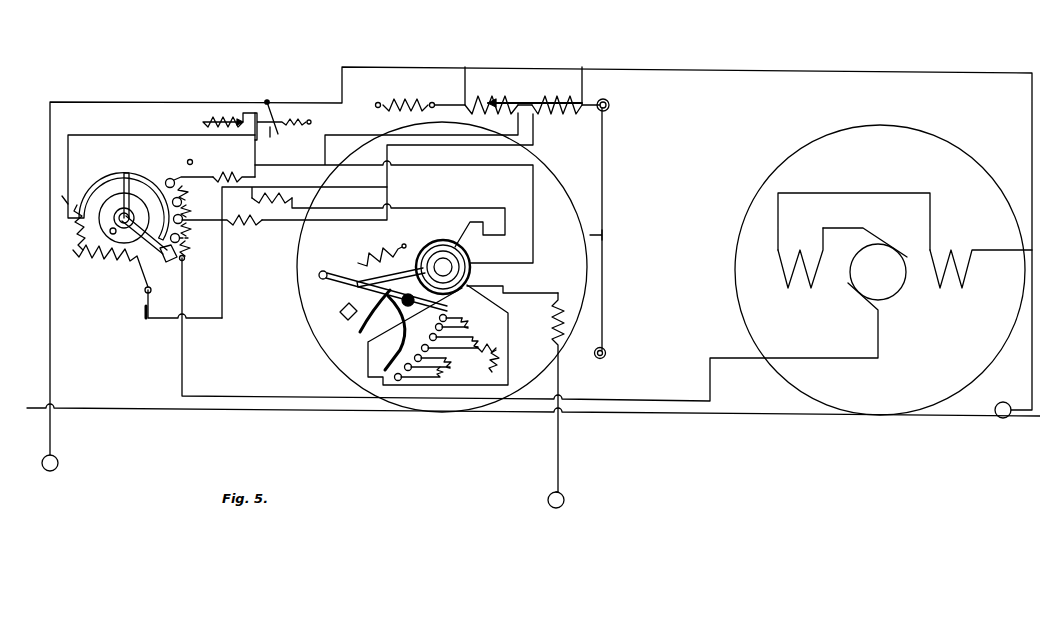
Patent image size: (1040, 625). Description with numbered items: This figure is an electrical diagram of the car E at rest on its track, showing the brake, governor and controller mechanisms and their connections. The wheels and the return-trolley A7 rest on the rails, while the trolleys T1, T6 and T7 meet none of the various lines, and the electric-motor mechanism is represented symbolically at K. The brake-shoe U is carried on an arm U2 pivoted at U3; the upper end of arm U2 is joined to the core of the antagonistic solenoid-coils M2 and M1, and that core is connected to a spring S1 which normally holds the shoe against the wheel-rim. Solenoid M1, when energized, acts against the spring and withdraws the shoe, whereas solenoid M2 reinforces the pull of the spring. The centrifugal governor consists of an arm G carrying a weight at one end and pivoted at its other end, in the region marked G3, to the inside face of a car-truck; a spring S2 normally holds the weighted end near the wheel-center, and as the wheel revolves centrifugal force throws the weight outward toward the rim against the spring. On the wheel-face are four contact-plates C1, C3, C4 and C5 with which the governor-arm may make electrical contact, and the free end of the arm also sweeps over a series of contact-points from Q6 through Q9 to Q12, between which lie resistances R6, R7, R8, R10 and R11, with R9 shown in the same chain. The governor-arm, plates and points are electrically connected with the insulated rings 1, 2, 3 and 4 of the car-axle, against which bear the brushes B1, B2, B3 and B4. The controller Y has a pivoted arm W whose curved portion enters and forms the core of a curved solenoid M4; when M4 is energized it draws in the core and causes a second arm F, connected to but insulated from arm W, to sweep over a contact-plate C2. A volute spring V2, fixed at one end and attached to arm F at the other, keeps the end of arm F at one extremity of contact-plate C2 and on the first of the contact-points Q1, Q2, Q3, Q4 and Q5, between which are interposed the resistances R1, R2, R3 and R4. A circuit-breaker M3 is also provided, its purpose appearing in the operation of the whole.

The controller Y is at (68, 200).
The pivoted arm W is at (121, 201).
The volute spring V2 is at (123, 214).
The arm F is at (149, 245).
The curved solenoid M4 is at (112, 269).
The contact-plate C2 is at (185, 177).
The contact-point Q5 is at (219, 165).
The resistance R4 is at (196, 190).
The contact-point Q4 is at (186, 206).
The resistance R3 is at (236, 205).
The contact-point Q3 is at (218, 215).
The resistance R2 is at (198, 231).
The contact-point Q2 is at (196, 242).
The resistance R1 is at (198, 250).
The contact-point Q1 is at (194, 265).
The circuit-breaker M3 is at (238, 120).
The spring S1 is at (407, 95).
The solenoid-coil M2 is at (491, 95).
The solenoid-coil M1 is at (557, 95).
The arm U2 is at (602, 160).
The brake-shoe U is at (611, 251).
The pivot U3 is at (577, 400).
The car E is at (680, 137).
The insulated ring 1 is at (443, 267).
The insulated ring 2 is at (446, 312).
The insulated ring 3 is at (460, 283).
The insulated ring 4 is at (466, 270).
The brush B4 is at (466, 219).
The brush B3 is at (495, 236).
The brush B2 is at (518, 253).
The brush B1 is at (512, 283).
The spring S2 is at (382, 252).
The pivot G3 is at (382, 280).
The centrifugal governor arm G is at (371, 292).
The contact-plate C4 is at (341, 318).
The contact-plate C1 is at (365, 317).
The contact-plate C5 is at (399, 333).
The contact-plate C3 is at (383, 372).
The contact-point Q6 is at (464, 312).
The resistance R6 is at (467, 323).
The resistance R7 is at (461, 338).
The resistance R8 is at (464, 347).
The resistance coil R9 is at (495, 362).
The contact-point Q9 is at (425, 351).
The resistance R10 is at (439, 362).
The resistance R11 is at (437, 375).
The contact-point Q12 is at (394, 379).
The electric-motor mechanism K is at (883, 270).
The terminal T7 is at (998, 400).
The return-trolley A7 is at (797, 432).
The terminal T6 is at (59, 463).
The terminal T1 is at (569, 494).